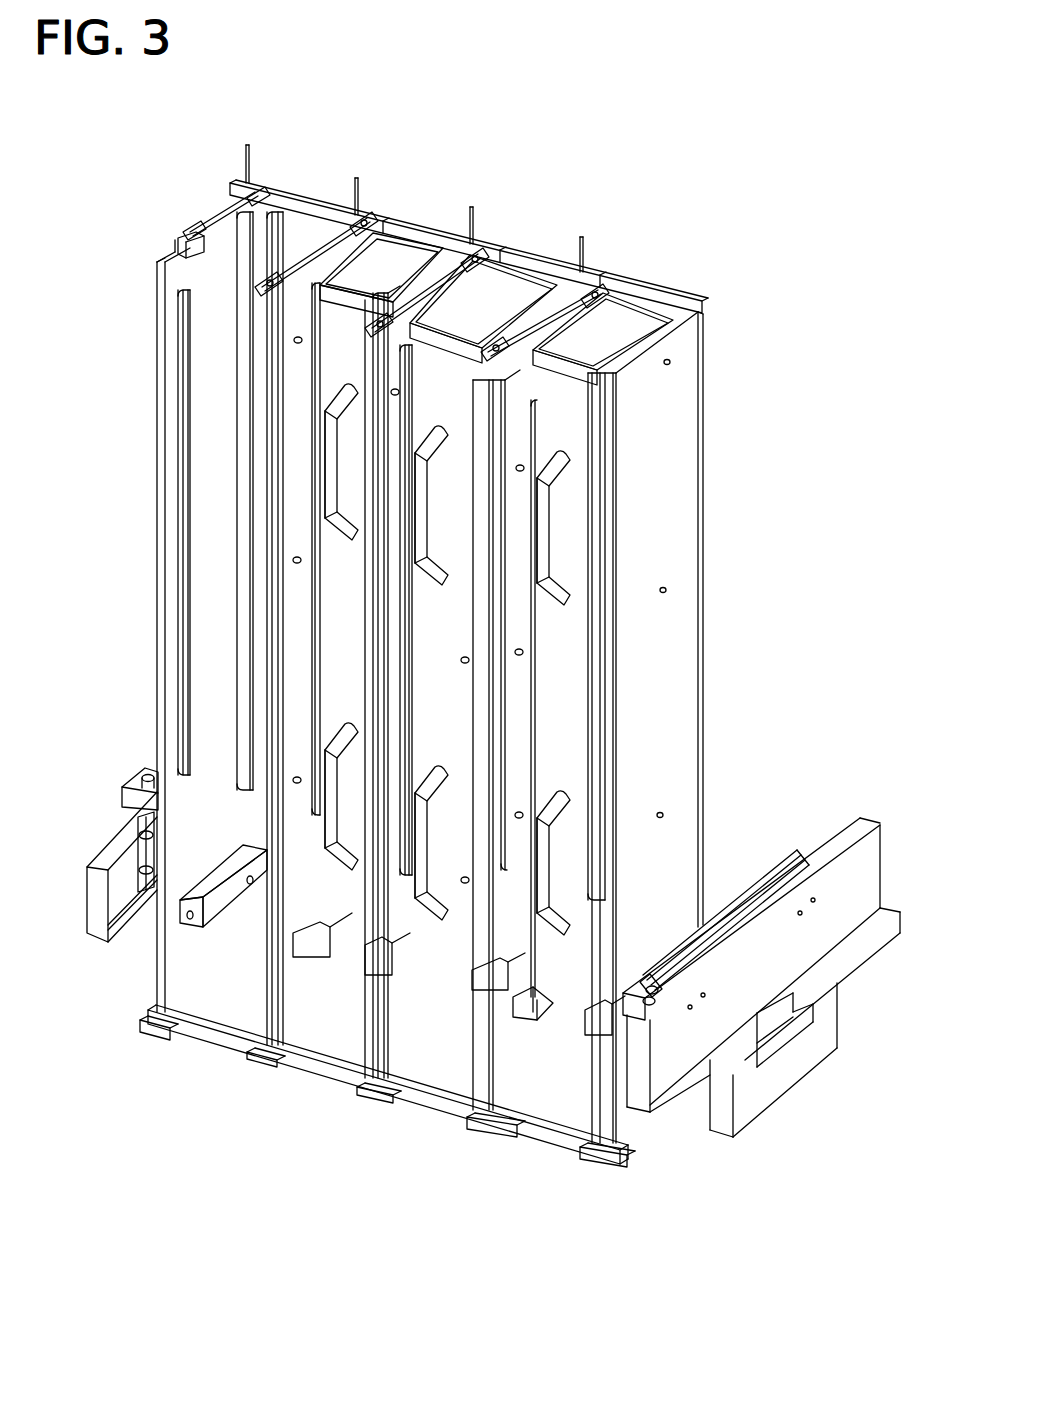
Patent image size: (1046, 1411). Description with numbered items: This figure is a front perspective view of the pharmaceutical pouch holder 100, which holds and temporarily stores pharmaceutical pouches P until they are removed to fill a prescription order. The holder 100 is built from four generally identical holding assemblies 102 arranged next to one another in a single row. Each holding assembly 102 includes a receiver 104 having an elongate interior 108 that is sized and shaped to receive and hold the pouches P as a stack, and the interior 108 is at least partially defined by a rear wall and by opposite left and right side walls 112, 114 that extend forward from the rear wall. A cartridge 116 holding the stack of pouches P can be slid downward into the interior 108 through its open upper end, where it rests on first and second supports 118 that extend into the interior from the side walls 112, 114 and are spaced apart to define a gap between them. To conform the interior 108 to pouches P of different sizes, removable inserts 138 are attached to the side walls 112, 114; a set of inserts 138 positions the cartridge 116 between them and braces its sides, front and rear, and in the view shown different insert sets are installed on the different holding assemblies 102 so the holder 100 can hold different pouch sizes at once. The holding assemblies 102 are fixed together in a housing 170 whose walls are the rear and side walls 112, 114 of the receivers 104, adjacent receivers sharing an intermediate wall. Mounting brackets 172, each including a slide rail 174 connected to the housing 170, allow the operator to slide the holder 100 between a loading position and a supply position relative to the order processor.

The holder 100 is at (795, 255).
The holding assembly 102 is at (185, 1018).
The receiver 104 is at (300, 195).
The interior 108 is at (205, 268).
The left side wall 112 is at (210, 740).
The right side wall 114 is at (672, 478).
The cartridge 116 is at (298, 1056).
The support 118 is at (190, 921).
The insert 138 is at (232, 198).
The housing 170 is at (718, 618).
The mounting bracket 172 is at (875, 810).
The slide rail 174 is at (140, 830).
The pharmaceutical pouch P is at (402, 252).